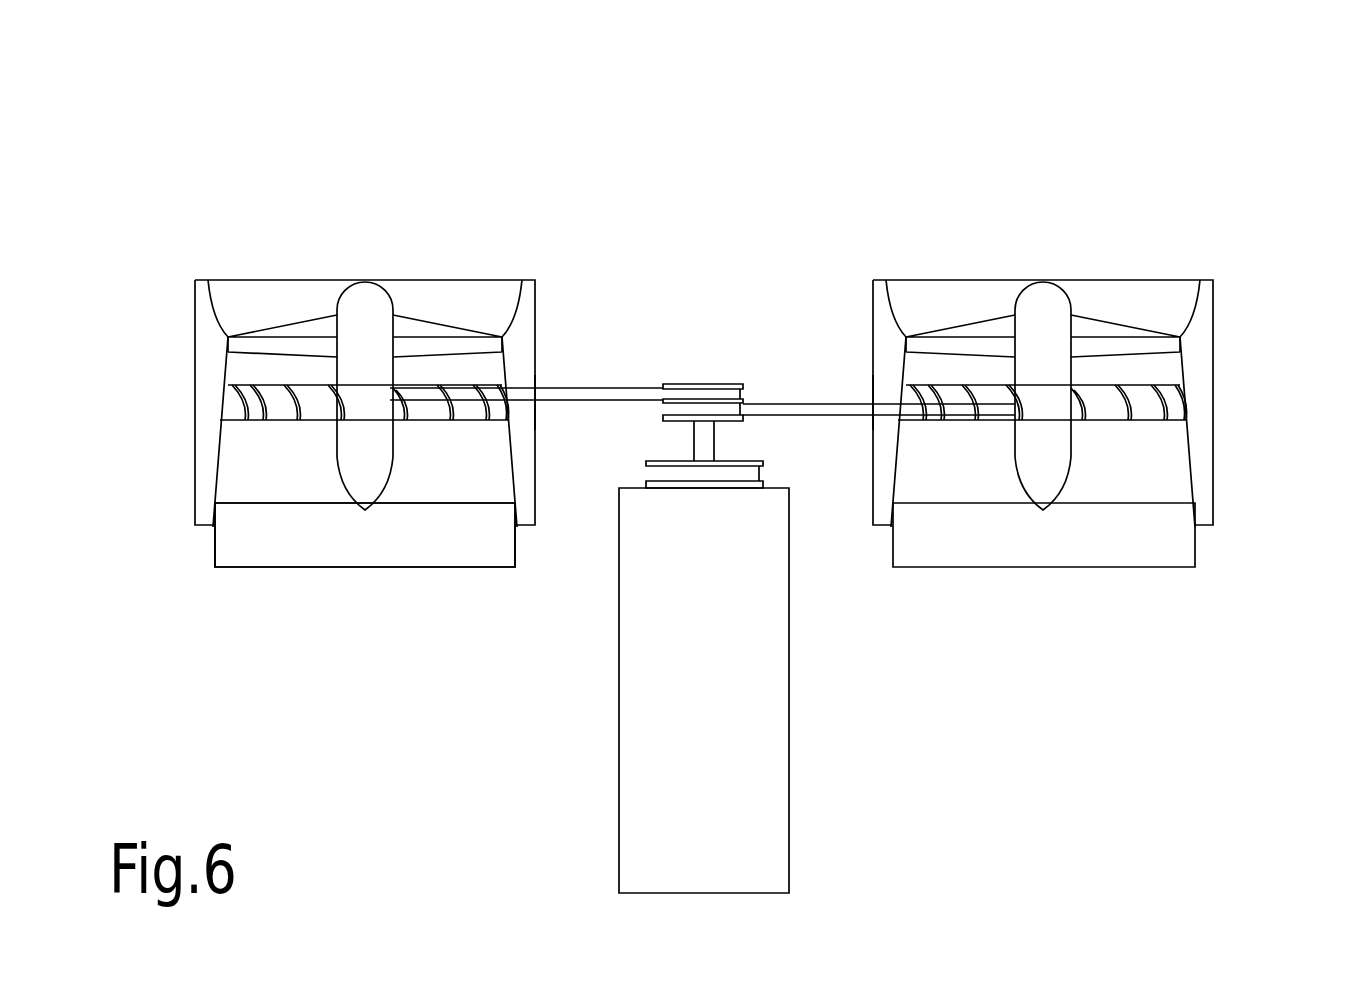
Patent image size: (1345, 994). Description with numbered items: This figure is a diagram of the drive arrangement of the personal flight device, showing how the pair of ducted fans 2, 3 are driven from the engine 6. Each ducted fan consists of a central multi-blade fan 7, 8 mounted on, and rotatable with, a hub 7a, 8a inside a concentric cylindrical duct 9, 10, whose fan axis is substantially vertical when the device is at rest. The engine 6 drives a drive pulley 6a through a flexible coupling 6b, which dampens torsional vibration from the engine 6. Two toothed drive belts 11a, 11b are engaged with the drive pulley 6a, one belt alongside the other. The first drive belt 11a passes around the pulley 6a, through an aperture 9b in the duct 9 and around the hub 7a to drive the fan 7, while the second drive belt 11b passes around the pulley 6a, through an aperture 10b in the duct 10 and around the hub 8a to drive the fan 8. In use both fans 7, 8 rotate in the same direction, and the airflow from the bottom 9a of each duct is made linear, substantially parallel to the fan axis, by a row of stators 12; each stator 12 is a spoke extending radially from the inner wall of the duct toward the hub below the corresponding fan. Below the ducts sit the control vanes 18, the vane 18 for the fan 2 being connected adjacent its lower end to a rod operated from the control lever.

The ducted fan 2 is at (355, 207).
The ducted fan 3 is at (1055, 197).
The engine 6 is at (704, 690).
The drive pulley 6a is at (714, 383).
The flexible coupling 6b is at (710, 481).
The multi-blade fan 7 is at (258, 337).
The hub 7a is at (364, 396).
The multi-blade fan 8 is at (1140, 333).
The hub 8a is at (1042, 396).
The cylindrical duct 9 is at (507, 302).
The bottom of duct 9a is at (230, 523).
The aperture 9b is at (538, 384).
The cylindrical duct 10 is at (908, 303).
The aperture 10b is at (870, 406).
The first drive belt 11a is at (539, 406).
The second drive belt 11b is at (868, 418).
The stator 12 is at (235, 402).
The control vane 18 is at (337, 548).